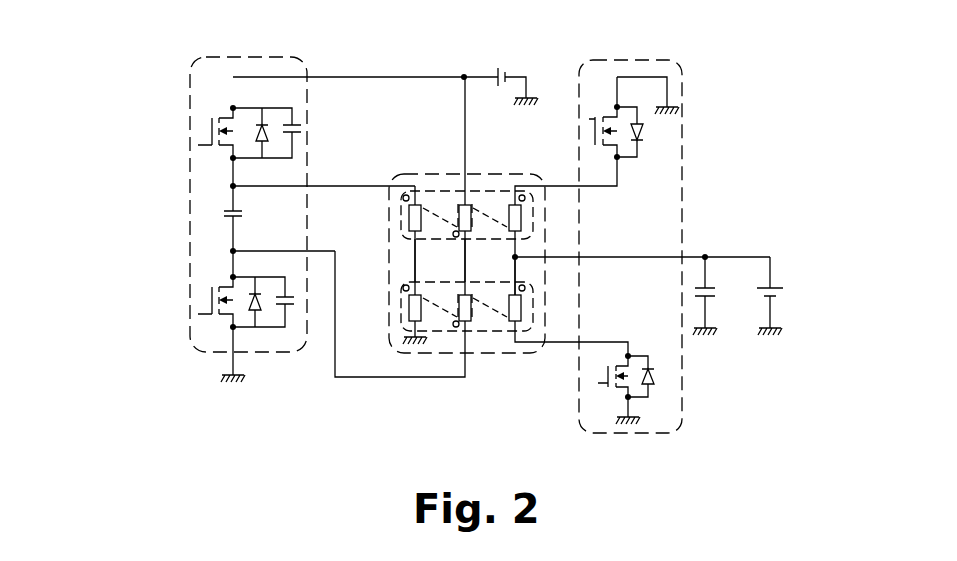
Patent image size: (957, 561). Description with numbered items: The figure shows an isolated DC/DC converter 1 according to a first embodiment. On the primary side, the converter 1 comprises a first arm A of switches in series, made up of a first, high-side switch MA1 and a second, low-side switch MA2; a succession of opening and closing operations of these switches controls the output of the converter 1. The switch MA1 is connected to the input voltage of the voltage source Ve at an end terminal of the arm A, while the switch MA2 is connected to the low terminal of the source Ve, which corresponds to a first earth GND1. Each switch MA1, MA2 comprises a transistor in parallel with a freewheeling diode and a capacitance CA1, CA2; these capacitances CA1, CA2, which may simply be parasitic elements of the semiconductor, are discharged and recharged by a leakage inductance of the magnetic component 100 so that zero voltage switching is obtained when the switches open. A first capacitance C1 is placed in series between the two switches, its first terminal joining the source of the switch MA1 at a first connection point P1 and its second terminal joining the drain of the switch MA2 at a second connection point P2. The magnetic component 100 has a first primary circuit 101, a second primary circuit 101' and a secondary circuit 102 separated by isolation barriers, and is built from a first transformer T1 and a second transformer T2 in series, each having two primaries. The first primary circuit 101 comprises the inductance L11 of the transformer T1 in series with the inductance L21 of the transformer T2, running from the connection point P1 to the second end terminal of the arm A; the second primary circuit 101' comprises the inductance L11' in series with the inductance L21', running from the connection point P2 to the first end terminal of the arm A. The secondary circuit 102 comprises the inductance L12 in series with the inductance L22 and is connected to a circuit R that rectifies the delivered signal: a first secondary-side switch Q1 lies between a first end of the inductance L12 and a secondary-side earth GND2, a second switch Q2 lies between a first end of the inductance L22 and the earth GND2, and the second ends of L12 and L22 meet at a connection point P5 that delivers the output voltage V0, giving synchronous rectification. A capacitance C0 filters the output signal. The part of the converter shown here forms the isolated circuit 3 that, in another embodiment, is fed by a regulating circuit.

The isolated DC/DC converter 1 is at (191, 72).
The first switch MA1 is at (203, 125).
The second switch MA2 is at (204, 298).
The capacitance CA1 is at (298, 123).
The capacitance CA2 is at (290, 305).
The isolated circuit 3 is at (345, 149).
The magnetic component 100 is at (412, 174).
The voltage source Ve is at (523, 51).
The first earth GND1 is at (233, 387).
The secondary-side earth GND2 is at (679, 110).
The first secondary-side switch Q1 is at (590, 131).
The second secondary-side switch Q2 is at (593, 391).
The rectification circuit R is at (682, 173).
The first connection point P1 is at (233, 187).
The second connection point P2 is at (233, 251).
The connection point P5 is at (515, 257).
The first capacitance C1 is at (248, 218).
The first inductance of the first primary circuit L11 is at (382, 212).
The first inductance of the second primary circuit L11' is at (484, 188).
The first inductance of the secondary circuit L12 is at (536, 173).
The second inductance of the first primary circuit L21 is at (384, 325).
The second inductance of the second primary circuit L21' is at (484, 349).
The second inductance of the secondary circuit L22 is at (522, 315).
The first transformer T1 is at (533, 215).
The second transformer T2 is at (531, 305).
The first primary circuit 101 is at (366, 252).
The second primary circuit 101' is at (402, 263).
The secondary circuit 102 is at (517, 272).
The capacitance C0 is at (719, 291).
The output voltage V0 is at (784, 292).
The first arm A is at (263, 352).